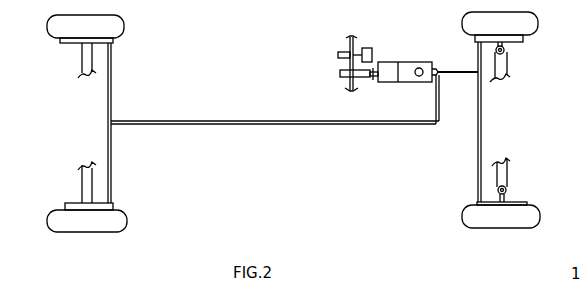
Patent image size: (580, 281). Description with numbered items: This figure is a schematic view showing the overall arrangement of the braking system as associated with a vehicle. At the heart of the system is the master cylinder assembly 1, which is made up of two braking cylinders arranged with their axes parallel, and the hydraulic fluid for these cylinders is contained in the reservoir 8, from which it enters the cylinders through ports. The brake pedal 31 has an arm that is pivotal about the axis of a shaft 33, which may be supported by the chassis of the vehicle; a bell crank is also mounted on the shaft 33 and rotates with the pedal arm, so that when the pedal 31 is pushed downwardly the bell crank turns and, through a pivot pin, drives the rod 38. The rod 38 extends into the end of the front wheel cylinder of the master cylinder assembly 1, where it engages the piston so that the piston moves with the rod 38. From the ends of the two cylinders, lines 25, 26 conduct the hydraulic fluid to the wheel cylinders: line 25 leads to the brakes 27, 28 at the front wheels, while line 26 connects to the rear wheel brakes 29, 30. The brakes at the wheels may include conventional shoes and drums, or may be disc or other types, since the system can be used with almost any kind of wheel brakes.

The master cylinder assembly 1 is at (402, 84).
The reservoir 8 is at (403, 62).
The line 25 is at (455, 75).
The line 26 is at (228, 125).
The front wheel brake 27 is at (473, 40).
The front wheel brake 28 is at (475, 203).
The rear wheel brake 29 is at (113, 40).
The rear wheel brake 30 is at (113, 205).
The brake pedal 31 is at (373, 51).
The shaft 33 is at (348, 42).
The rod 38 is at (364, 78).